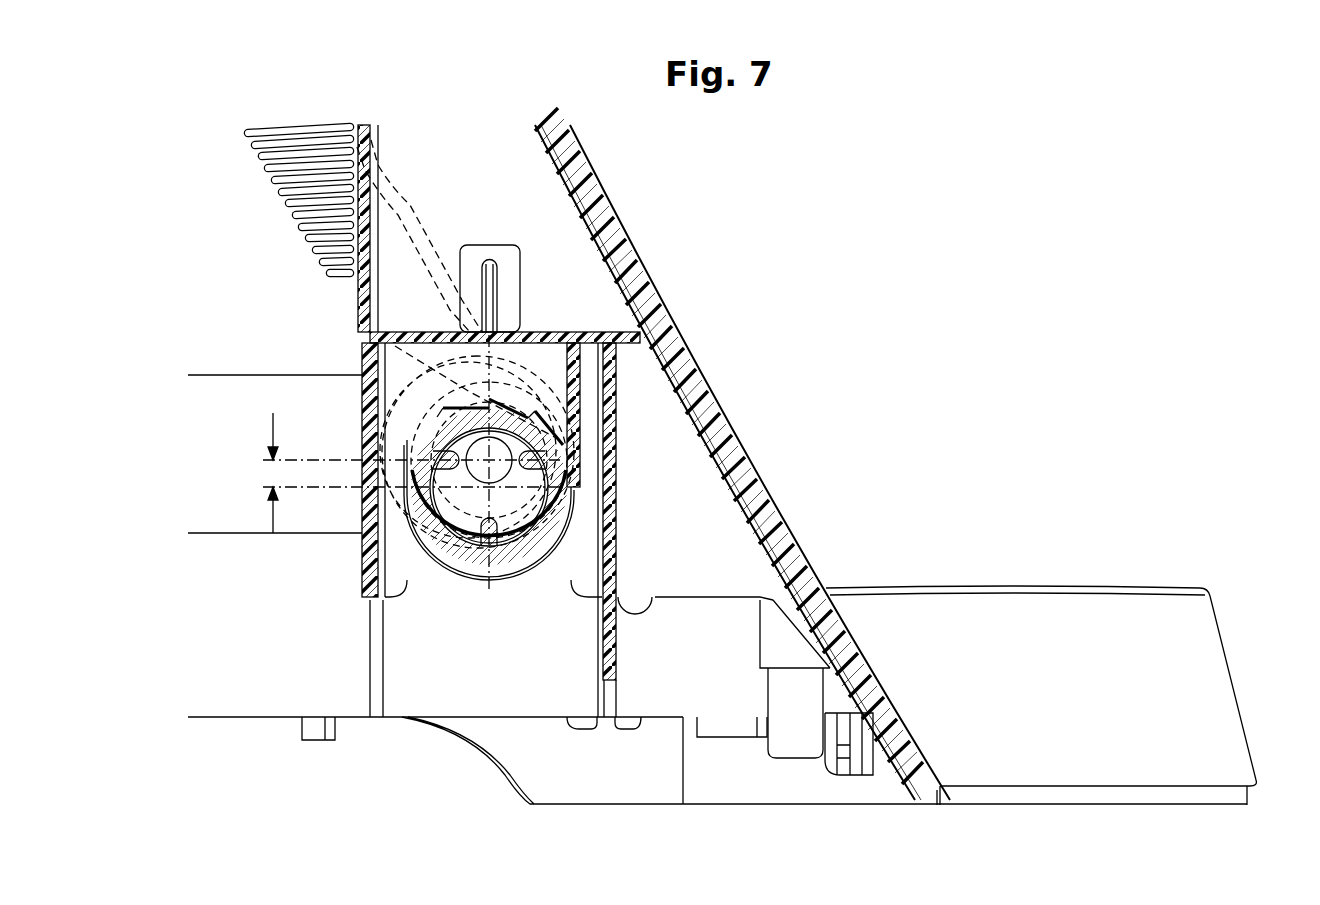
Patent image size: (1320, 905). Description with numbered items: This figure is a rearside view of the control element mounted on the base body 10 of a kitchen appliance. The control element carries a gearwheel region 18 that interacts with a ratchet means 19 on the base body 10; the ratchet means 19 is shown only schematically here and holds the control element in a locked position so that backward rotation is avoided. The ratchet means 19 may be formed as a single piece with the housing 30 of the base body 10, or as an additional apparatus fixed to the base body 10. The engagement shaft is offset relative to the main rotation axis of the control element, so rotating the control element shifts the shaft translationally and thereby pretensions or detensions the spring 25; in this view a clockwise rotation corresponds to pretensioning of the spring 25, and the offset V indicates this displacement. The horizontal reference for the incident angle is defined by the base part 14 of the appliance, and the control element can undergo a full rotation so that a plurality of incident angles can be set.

The base body 10 is at (681, 200).
The base part 14 is at (1080, 606).
The gearwheel region 18 is at (521, 396).
The ratchet means 19 is at (588, 498).
The spring 25 is at (316, 238).
The housing 30 is at (645, 284).
The vertical offset V is at (275, 470).